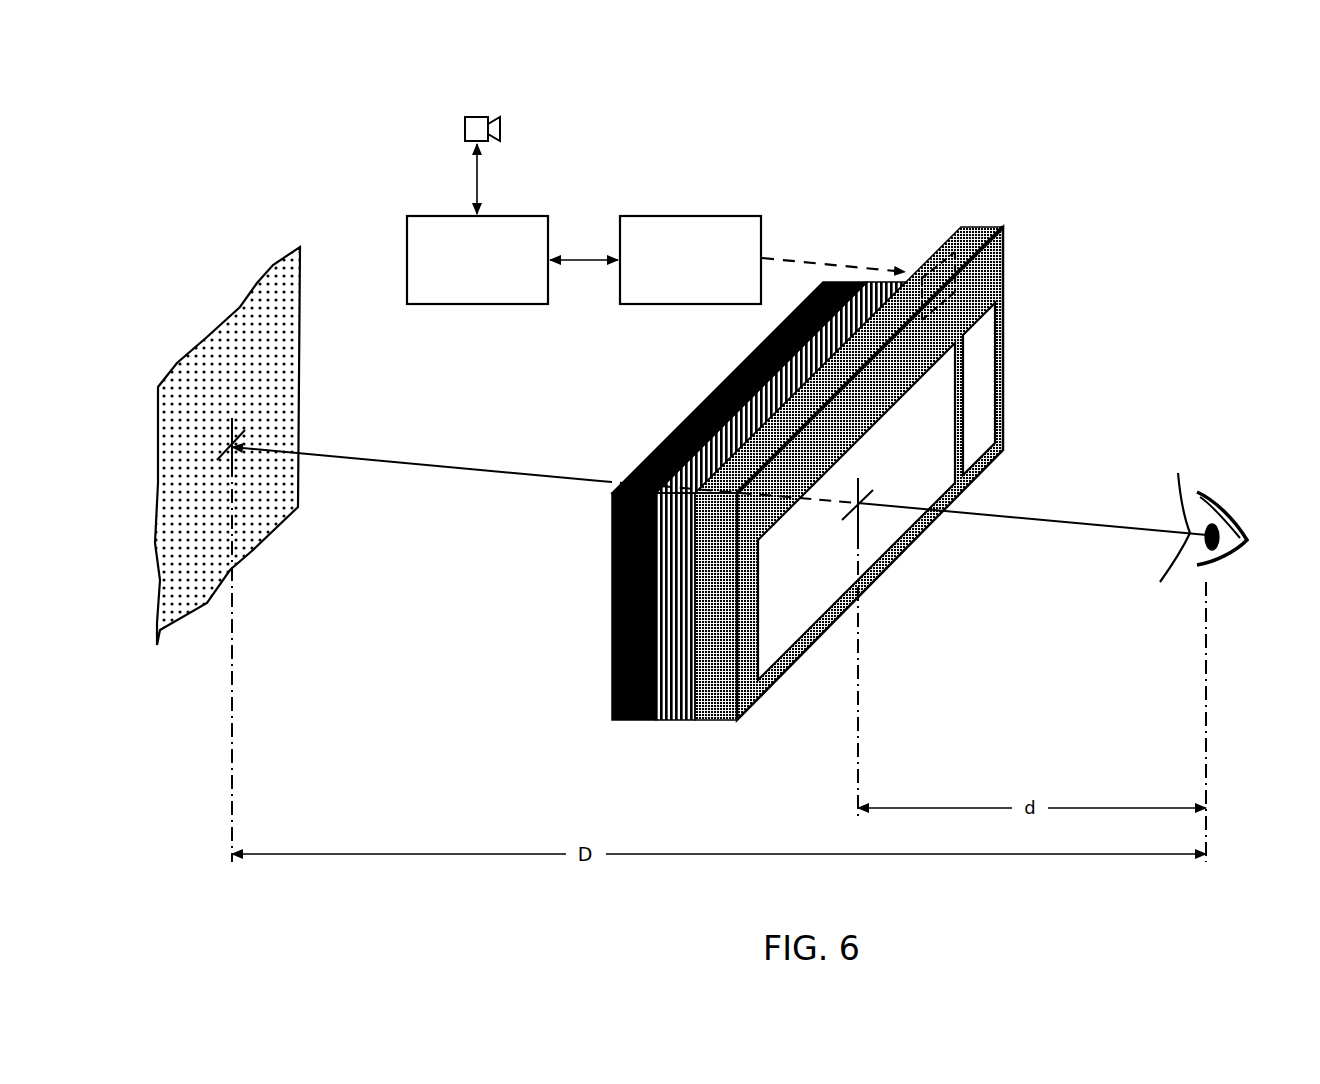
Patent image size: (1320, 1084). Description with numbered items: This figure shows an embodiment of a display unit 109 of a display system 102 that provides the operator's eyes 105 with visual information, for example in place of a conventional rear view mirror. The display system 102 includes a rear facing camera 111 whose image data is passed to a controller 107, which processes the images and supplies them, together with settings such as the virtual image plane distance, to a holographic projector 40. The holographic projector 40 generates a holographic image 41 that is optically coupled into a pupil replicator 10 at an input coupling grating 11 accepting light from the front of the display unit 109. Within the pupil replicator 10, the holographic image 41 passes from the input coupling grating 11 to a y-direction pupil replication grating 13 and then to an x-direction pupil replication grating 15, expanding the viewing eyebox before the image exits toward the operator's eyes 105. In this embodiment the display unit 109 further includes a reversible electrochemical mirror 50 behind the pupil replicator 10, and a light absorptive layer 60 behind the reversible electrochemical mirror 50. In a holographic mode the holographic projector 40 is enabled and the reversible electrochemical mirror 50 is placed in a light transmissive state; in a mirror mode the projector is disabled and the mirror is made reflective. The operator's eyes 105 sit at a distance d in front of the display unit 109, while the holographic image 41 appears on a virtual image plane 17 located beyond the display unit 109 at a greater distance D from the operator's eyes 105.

The display system 102 is at (672, 128).
The rear facing camera 111 is at (473, 117).
The controller 107 is at (459, 274).
The holographic projector 40 is at (674, 274).
The holographic image 41 is at (843, 262).
The display unit 109 is at (861, 167).
The virtual image plane 17 is at (340, 383).
The light absorptive layer 60 is at (612, 726).
The reversible electrochemical mirror 50 is at (695, 726).
The pupil replicator 10 is at (695, 726).
The input coupling grating 11 is at (920, 444).
The y-direction pupil replication grating 13 is at (980, 403).
The x-direction pupil replication grating 15 is at (887, 532).
The operator's eyes 105 is at (1168, 607).